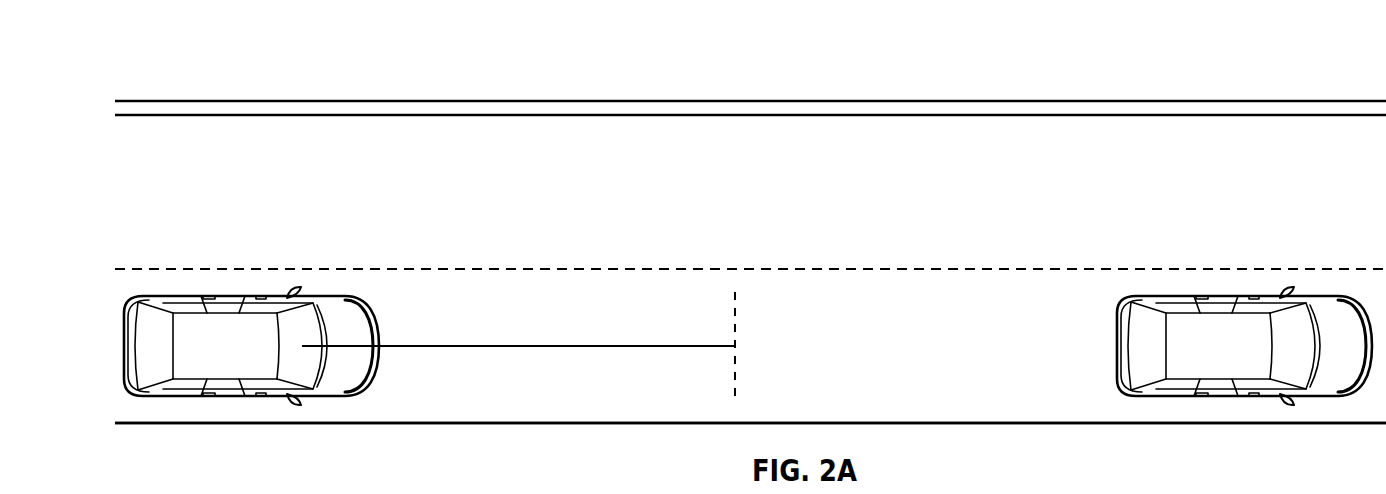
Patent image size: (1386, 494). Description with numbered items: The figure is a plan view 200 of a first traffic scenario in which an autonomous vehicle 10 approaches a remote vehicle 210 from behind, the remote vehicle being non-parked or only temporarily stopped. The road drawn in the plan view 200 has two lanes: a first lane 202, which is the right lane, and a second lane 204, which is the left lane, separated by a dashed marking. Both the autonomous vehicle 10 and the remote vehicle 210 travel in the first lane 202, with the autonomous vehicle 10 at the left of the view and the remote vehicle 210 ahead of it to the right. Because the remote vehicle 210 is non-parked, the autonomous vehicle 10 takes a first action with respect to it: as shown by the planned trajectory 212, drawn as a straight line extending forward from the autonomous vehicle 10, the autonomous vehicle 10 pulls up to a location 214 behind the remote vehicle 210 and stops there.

The plan view 200 is at (144, 58).
The autonomous vehicle 10 is at (226, 292).
The first lane 202 is at (672, 314).
The second lane 204 is at (672, 178).
The remote vehicle 210 is at (1313, 293).
The planned trajectory 212 is at (506, 348).
The location 214 is at (738, 378).